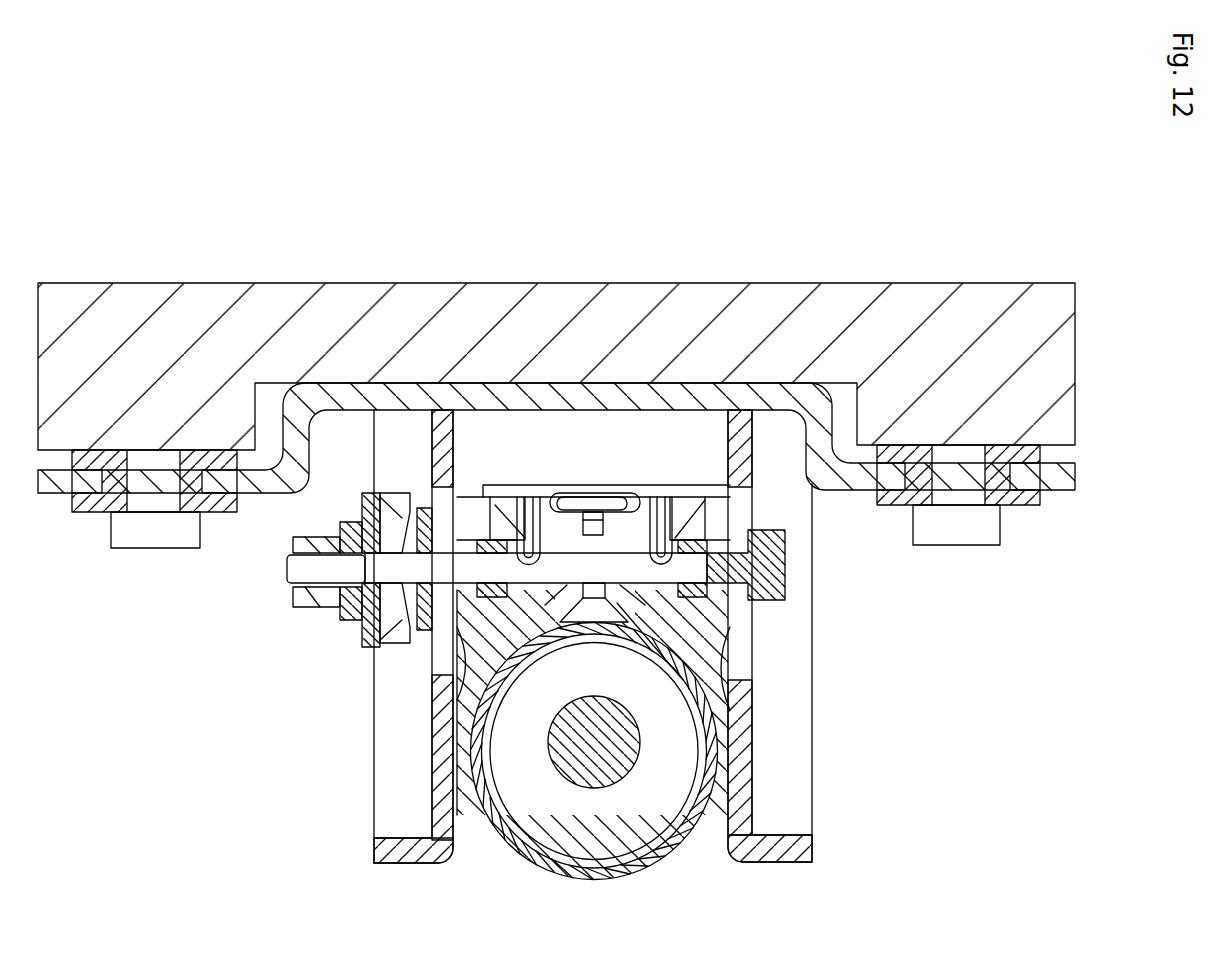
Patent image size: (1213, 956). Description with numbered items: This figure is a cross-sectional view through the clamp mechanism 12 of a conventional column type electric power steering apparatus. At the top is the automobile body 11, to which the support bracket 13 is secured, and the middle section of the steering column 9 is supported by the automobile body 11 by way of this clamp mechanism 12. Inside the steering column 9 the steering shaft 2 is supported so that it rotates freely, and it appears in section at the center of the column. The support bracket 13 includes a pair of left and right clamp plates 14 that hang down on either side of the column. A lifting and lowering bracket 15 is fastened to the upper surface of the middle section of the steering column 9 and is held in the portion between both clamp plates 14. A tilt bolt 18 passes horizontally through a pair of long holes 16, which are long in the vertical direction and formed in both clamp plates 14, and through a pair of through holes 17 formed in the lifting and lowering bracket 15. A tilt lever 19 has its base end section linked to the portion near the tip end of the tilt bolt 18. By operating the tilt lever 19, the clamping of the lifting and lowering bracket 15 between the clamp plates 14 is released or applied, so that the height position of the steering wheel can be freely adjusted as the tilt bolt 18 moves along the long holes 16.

The steering shaft 2 is at (600, 768).
The steering column 9 is at (548, 845).
The automobile body 11 is at (850, 300).
The clamp mechanism 12 is at (367, 773).
The support bracket 13 is at (705, 398).
The clamp plates 14 is at (435, 710).
The lifting and lowering bracket 15 is at (488, 497).
The long holes 16 is at (445, 660).
The through holes 17 is at (537, 500).
The tilt bolt 18 is at (596, 567).
The tilt lever 19 is at (362, 638).